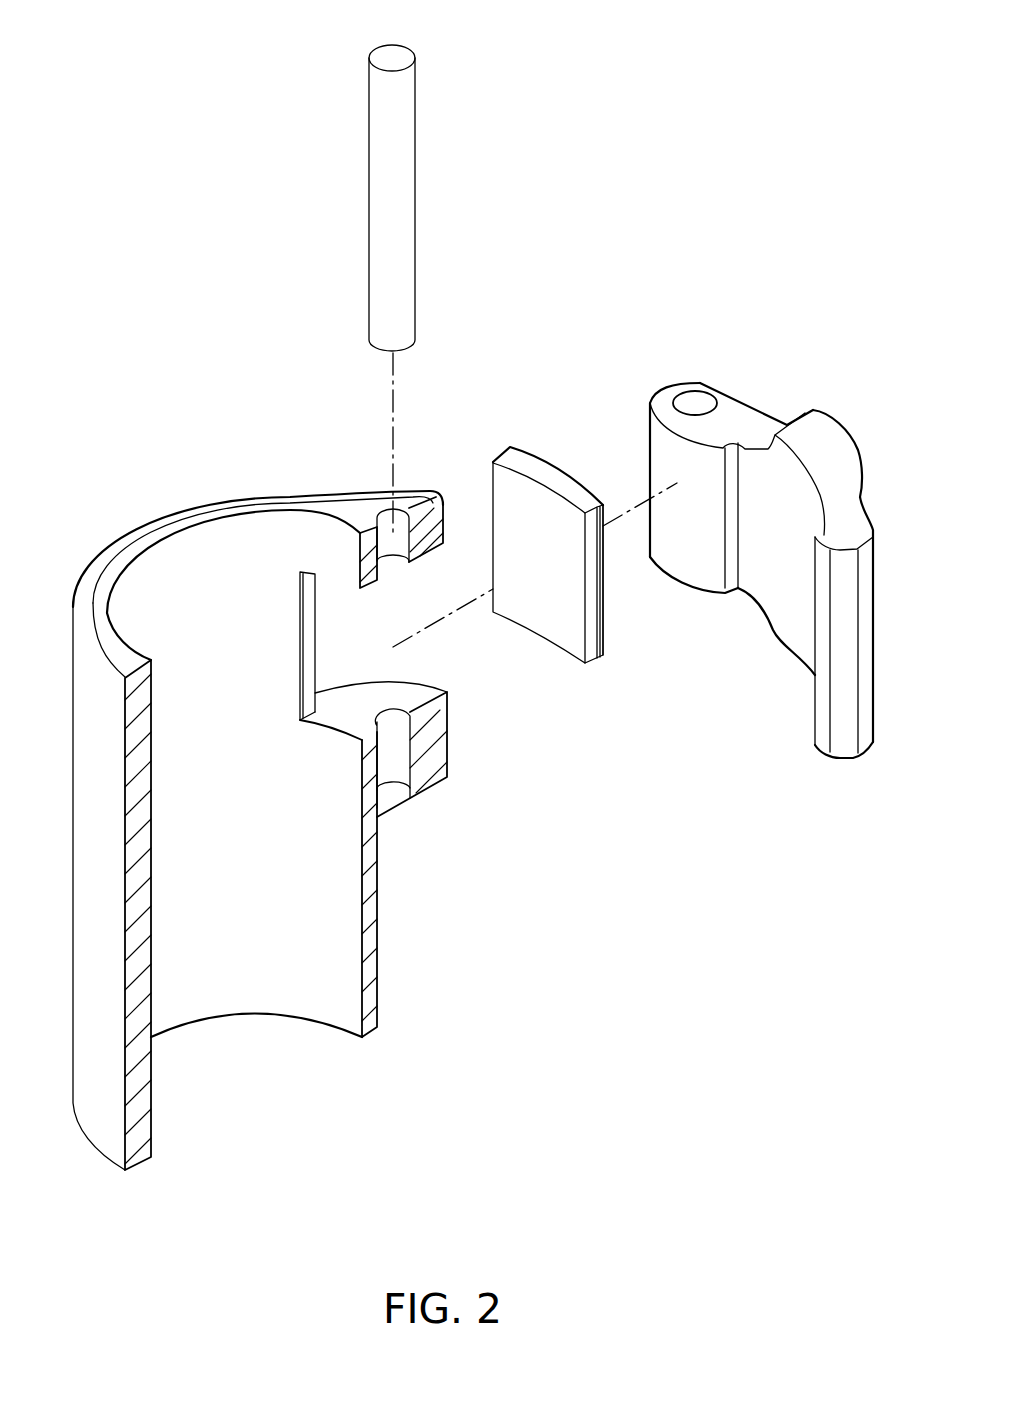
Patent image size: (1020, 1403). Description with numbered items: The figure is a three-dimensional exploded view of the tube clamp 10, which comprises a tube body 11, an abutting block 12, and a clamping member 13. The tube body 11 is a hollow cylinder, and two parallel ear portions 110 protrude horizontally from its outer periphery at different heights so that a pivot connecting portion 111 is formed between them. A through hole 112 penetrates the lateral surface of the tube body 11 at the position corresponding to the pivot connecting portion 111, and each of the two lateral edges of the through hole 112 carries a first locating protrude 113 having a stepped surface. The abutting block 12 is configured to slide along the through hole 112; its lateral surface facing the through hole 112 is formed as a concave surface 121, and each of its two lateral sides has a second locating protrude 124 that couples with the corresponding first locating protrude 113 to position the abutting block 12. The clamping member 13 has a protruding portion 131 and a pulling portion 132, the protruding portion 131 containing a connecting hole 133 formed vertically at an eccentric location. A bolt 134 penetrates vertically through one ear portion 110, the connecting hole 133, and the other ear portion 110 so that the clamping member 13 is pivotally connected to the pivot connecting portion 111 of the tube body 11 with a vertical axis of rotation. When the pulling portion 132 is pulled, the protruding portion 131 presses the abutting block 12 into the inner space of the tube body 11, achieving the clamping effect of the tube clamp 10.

The tube clamp 10 is at (435, 910).
The tube body 11 is at (190, 517).
The ear portion 110 is at (418, 492).
The pivot connecting portion 111 is at (377, 672).
The through hole 112 is at (330, 633).
The first locating protrude 113 is at (305, 680).
The abutting block 12 is at (562, 486).
The concave surface 121 is at (543, 558).
The second locating protrude 124 is at (603, 504).
The clamping member 13 is at (823, 440).
The protruding portion 131 is at (693, 550).
The pulling portion 132 is at (833, 660).
The connecting hole 133 is at (695, 403).
The bolt 134 is at (385, 282).